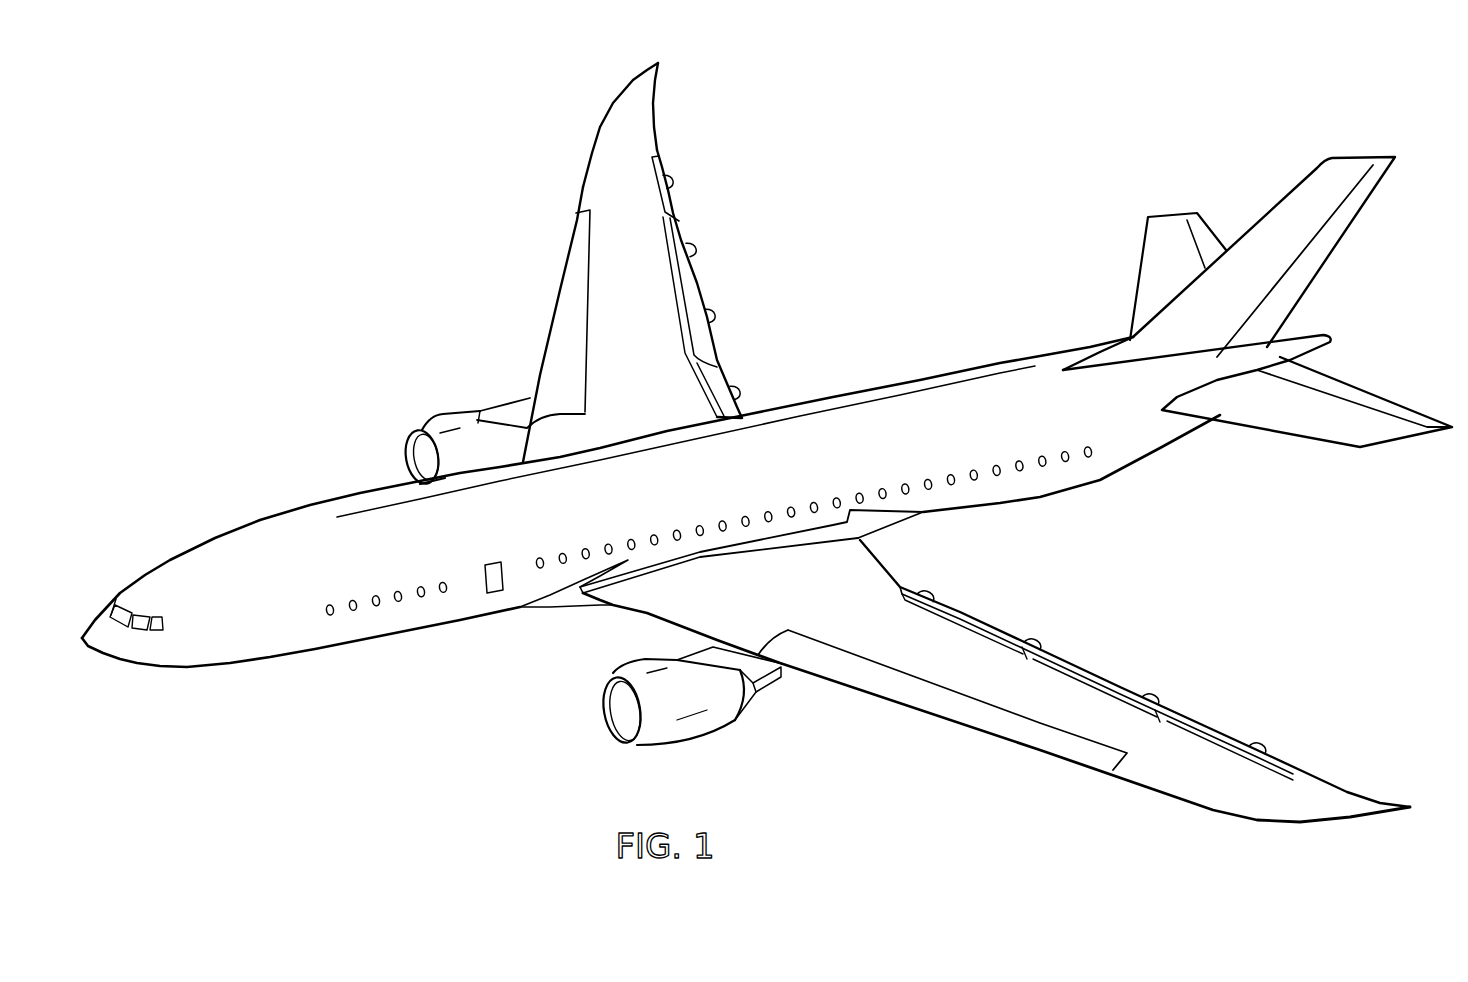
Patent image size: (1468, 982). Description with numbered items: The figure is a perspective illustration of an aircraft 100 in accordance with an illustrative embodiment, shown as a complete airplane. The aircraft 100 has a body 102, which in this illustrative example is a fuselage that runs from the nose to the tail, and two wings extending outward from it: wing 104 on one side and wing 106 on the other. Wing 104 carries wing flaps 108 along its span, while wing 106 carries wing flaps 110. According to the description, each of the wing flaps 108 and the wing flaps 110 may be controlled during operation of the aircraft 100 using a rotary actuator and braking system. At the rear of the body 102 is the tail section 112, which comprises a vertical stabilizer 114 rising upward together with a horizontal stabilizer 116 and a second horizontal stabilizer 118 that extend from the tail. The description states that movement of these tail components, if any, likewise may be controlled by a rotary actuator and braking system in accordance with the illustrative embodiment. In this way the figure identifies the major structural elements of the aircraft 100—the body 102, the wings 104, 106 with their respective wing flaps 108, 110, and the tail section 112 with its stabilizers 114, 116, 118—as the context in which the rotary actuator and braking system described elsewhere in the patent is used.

The aircraft 100 is at (358, 213).
The body 102 is at (262, 519).
The wing 104 is at (1250, 818).
The wing 106 is at (655, 98).
The wing flaps 108 is at (1104, 645).
The wing flaps 110 is at (740, 274).
The tail section 112 is at (1200, 483).
The vertical stabilizer 114 is at (1338, 244).
The horizontal stabilizer 116 is at (1310, 435).
The horizontal stabilizer 118 is at (1138, 273).